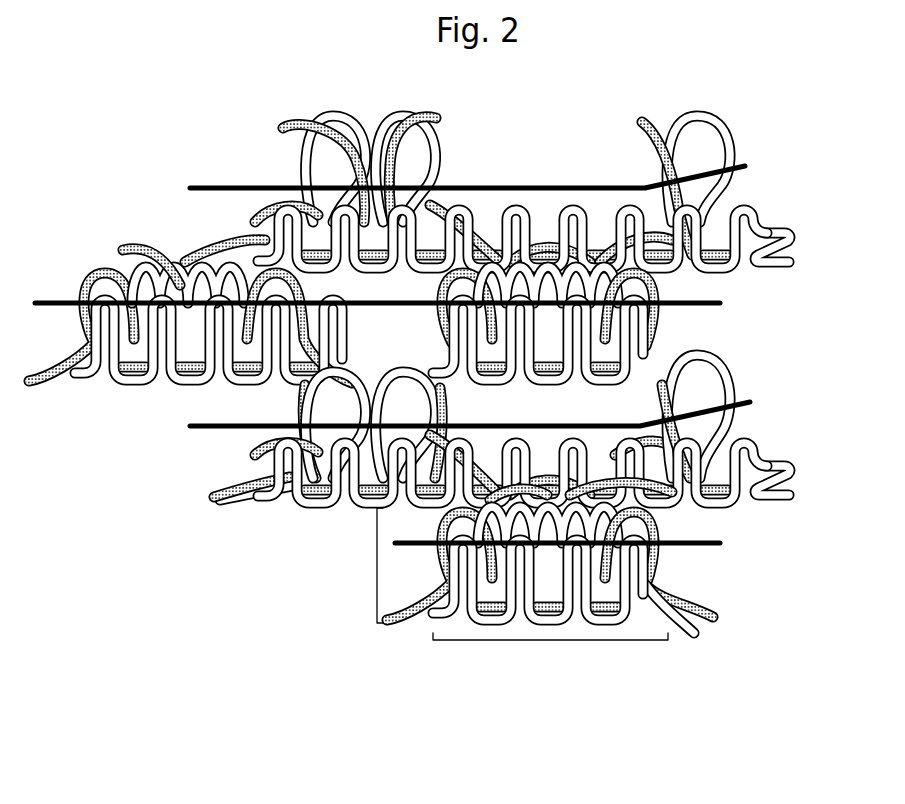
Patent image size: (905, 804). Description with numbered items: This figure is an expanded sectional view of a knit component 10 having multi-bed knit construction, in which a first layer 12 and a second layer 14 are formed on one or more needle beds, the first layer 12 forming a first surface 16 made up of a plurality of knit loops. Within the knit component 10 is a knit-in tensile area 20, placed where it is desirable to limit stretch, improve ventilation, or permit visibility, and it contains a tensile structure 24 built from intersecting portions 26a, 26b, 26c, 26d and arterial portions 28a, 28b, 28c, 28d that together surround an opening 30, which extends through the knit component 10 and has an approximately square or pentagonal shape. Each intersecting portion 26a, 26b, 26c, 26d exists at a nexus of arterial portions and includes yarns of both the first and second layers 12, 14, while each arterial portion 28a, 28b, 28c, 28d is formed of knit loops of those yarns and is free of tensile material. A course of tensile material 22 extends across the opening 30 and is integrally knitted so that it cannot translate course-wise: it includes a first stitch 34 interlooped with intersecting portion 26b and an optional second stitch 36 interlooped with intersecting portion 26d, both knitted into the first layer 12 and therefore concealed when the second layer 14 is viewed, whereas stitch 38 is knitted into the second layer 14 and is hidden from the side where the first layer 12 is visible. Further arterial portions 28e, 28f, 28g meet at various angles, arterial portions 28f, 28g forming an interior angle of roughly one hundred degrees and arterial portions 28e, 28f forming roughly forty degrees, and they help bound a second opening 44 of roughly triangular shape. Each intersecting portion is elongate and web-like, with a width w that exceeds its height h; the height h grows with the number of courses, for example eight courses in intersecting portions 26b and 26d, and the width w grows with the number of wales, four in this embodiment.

The knit component 10 is at (422, 364).
The first layer 12 is at (720, 187).
The second layer 14 is at (740, 500).
The first surface 16 is at (770, 226).
The knit-in tensile area 20 is at (166, 210).
The course of tensile material 22 is at (340, 306).
The tensile structure 24 is at (208, 219).
The intersecting portion 26a is at (427, 183).
The intersecting portion 26b is at (670, 323).
The intersecting portion 26c is at (365, 503).
The intersecting portion 26d is at (93, 264).
The arterial portion 28a is at (503, 246).
The arterial portion 28b is at (440, 390).
The arterial portion 28c is at (307, 387).
The arterial portion 28d is at (252, 240).
The arterial portion 28e is at (667, 392).
The arterial portion 28f is at (650, 503).
The arterial portion 28g is at (515, 490).
The opening 30 is at (382, 296).
The first stitch 34 is at (540, 248).
The second stitch 36 is at (153, 248).
The stitch 38 is at (307, 493).
The second opening 44 is at (560, 412).
The height h is at (377, 566).
The width w is at (551, 641).